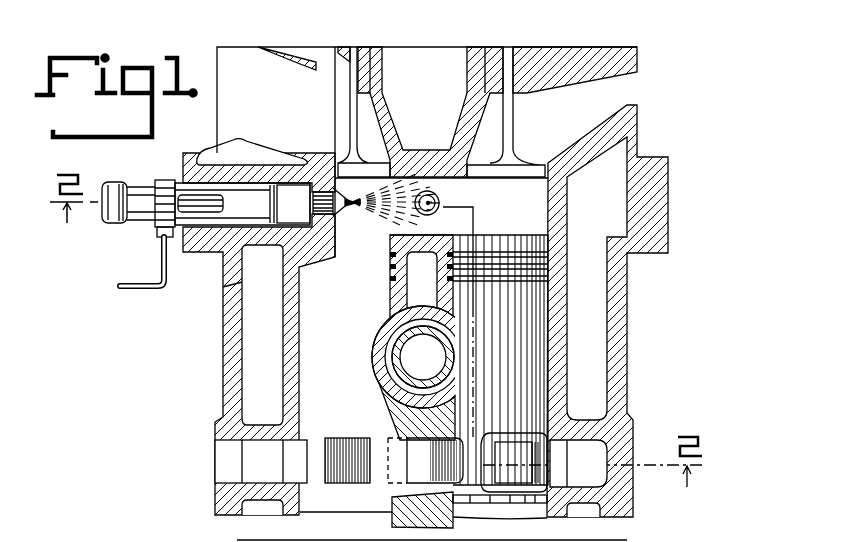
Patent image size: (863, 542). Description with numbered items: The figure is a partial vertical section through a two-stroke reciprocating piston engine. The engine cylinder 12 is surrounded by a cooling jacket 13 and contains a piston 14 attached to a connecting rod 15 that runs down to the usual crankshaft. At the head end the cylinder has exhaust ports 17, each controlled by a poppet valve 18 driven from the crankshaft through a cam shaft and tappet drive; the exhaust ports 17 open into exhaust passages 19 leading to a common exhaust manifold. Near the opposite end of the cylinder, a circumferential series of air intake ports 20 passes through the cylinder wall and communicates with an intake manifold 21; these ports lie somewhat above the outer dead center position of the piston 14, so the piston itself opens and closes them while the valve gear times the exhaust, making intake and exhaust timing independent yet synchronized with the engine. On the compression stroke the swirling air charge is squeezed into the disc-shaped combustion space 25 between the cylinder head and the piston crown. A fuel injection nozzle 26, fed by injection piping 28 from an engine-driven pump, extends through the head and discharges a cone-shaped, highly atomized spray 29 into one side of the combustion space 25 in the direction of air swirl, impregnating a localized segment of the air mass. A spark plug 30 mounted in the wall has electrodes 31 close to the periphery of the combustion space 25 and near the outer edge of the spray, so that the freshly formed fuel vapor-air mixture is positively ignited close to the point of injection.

The engine cylinder 12 is at (280, 372).
The cooling jacket 13 is at (222, 322).
The piston 14 is at (520, 367).
The connecting rod 15 is at (400, 418).
The exhaust ports 17 is at (390, 137).
The poppet valves 18 is at (347, 72).
The exhaust passages 19 is at (627, 117).
The air intake ports 20 is at (393, 477).
The intake manifold 21 is at (248, 462).
The combustion space 25 is at (535, 218).
The fuel injection nozzle 26 is at (132, 190).
The injection piping 28 is at (137, 293).
The atomized spray 29 is at (392, 217).
The spark plug 30 is at (438, 201).
The electrodes 31 is at (440, 208).